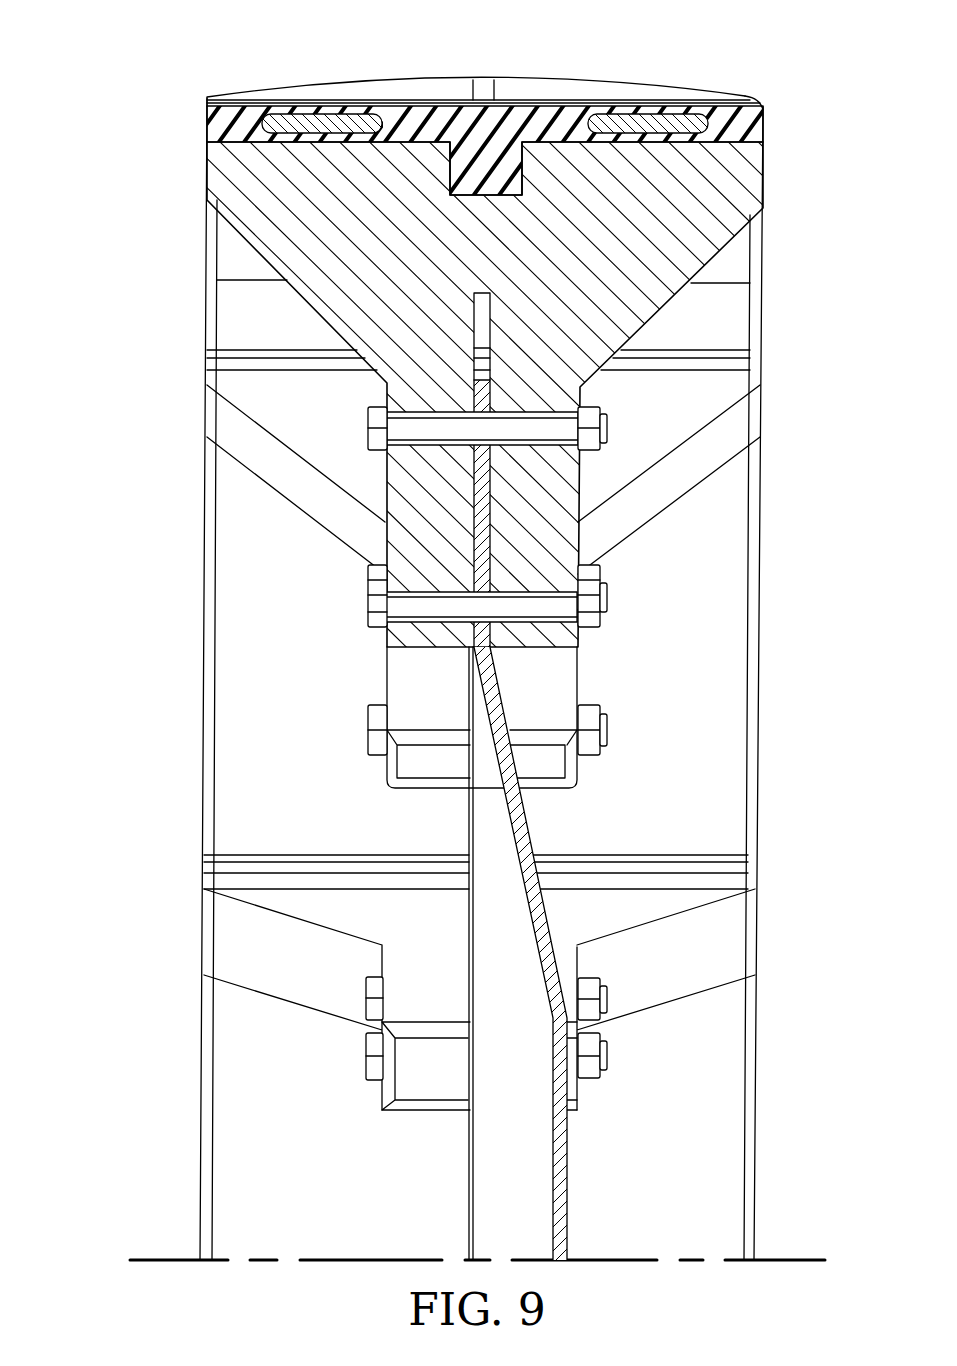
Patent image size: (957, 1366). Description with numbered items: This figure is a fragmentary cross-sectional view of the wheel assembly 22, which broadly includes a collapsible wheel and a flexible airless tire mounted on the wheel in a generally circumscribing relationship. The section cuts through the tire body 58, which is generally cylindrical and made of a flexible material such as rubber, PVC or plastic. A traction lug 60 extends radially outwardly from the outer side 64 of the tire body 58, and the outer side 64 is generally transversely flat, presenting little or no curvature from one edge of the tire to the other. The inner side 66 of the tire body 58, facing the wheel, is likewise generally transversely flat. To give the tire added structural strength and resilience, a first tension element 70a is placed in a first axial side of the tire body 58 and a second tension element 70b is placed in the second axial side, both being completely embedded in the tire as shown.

The wheel assembly 22 is at (78, 77).
The tire body 58 is at (773, 109).
The traction lugs 60 is at (425, 97).
The outer side 64 is at (723, 106).
The inner side 66 is at (722, 143).
The first tension element 70a is at (282, 114).
The second tension element 70b is at (663, 115).